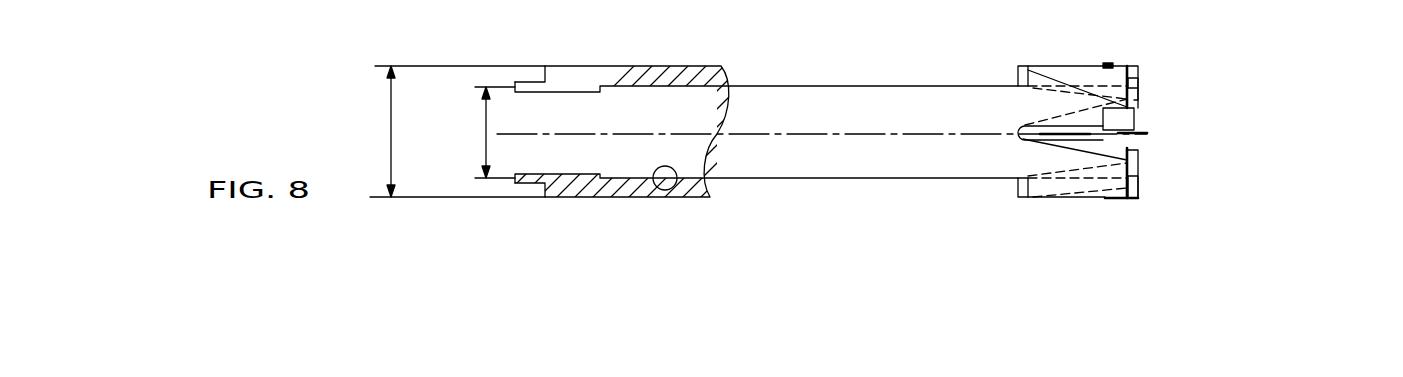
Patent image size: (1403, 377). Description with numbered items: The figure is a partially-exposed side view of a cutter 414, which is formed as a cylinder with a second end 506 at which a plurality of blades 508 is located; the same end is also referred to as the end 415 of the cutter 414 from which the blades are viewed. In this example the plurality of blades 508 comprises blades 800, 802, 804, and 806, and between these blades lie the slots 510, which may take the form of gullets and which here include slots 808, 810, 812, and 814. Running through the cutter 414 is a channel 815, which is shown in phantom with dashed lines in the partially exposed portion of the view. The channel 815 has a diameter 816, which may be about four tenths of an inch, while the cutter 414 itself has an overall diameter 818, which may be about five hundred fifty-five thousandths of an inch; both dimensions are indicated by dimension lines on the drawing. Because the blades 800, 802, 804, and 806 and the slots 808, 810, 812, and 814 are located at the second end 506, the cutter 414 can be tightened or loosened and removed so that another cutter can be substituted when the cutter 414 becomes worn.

The cutter 414 is at (615, 66).
The end 415 is at (1138, 100).
The second end 506 is at (1136, 66).
The plurality of blades 508 is at (1273, 63).
The slots 510 is at (1273, 206).
The blade 800 is at (1139, 160).
The blade 802 is at (1139, 186).
The blade 804 is at (1136, 110).
The blade 806 is at (1138, 80).
The slot 808 is at (1107, 157).
The slot 810 is at (1110, 201).
The slot 812 is at (1145, 131).
The slot 814 is at (1110, 63).
The channel 815 is at (657, 191).
The diameter 816 is at (486, 124).
The diameter 818 is at (391, 113).